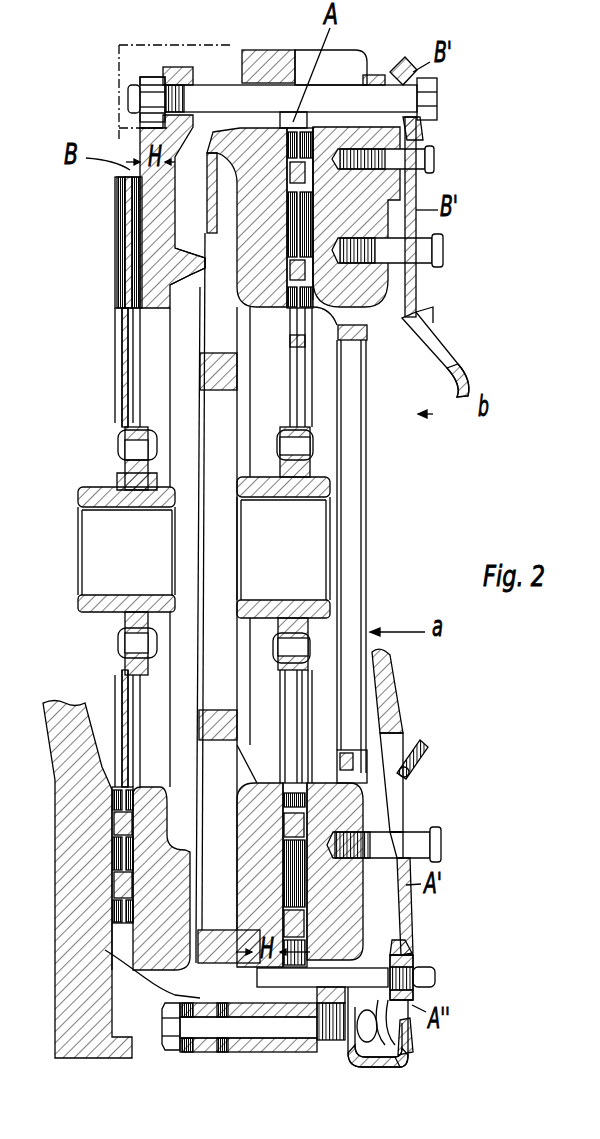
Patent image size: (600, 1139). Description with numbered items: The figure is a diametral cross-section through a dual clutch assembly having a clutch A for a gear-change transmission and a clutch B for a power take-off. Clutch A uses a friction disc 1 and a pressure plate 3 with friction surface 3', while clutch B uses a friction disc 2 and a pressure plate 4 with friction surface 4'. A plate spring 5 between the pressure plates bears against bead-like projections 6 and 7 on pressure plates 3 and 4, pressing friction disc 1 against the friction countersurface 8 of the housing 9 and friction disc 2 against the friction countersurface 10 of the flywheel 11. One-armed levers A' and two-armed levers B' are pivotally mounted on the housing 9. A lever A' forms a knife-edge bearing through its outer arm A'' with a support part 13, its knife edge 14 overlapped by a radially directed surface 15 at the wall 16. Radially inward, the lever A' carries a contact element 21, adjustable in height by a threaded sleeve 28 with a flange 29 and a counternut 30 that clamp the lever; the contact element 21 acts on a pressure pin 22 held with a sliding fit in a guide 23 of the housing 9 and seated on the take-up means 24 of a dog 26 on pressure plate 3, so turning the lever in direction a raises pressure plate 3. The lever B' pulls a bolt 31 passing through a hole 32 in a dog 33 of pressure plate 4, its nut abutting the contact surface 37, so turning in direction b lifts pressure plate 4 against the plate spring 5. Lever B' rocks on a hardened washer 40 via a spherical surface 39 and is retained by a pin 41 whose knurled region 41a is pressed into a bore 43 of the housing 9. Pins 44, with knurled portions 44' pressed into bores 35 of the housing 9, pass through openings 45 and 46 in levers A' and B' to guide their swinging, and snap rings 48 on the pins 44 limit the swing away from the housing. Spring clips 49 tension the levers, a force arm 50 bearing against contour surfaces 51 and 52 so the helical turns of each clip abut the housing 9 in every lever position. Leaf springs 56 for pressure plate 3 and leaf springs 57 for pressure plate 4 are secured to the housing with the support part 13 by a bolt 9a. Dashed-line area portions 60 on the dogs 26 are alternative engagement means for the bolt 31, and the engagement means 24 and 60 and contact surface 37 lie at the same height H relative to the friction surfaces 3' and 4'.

The friction disc 1 is at (355, 235).
The friction disc 2 is at (130, 230).
The pressure plate 3 is at (268, 41).
The friction surface 3' is at (292, 70).
The pressure plate 4 is at (174, 154).
The friction surface 4' is at (118, 481).
The plate spring 5 is at (213, 150).
The bead-like projection 6 is at (250, 140).
The bead-like projection 7 is at (193, 262).
The friction countersurface 8 is at (410, 227).
The housing 9 is at (337, 133).
The screw or bolt 9a is at (238, 1030).
The friction countersurface 10 is at (130, 837).
The flywheel 11 is at (72, 885).
The support part 13 is at (380, 1067).
The knife edge 14 is at (410, 1055).
The radially directed surface 15 is at (413, 1033).
The wall 16 is at (396, 1062).
The contact element 21 is at (435, 982).
The pressure pin 22 is at (280, 990).
The guide 23 is at (322, 1040).
The take-up means 24 is at (243, 975).
The dog 26 is at (150, 980).
The threaded sleeve 28 is at (405, 950).
The flange 29 is at (437, 1006).
The counternut 30 is at (435, 970).
The bolt 31 is at (323, 95).
The hole 32 is at (187, 67).
The dog 33 is at (140, 82).
The bore 35 is at (148, 116).
The contact surface 37 is at (170, 87).
The spherical surface 39 is at (420, 137).
The hardened washer 40 is at (437, 110).
The pin 41 is at (417, 163).
The knurled region 41a is at (428, 168).
The bore 43 is at (410, 70).
The pin 44 is at (419, 548).
The knurled portion 44' is at (272, 850).
The opening 45 is at (403, 823).
The opening 46 is at (417, 273).
The snap ring 48 is at (443, 245).
The spring clip 49 is at (427, 147).
The force arm 50 is at (410, 767).
The contour surface 51 is at (424, 738).
The contour surface 52 is at (447, 350).
The leaf spring 56 is at (217, 1052).
The leaf spring 57 is at (180, 1052).
The area portion 60 is at (168, 999).